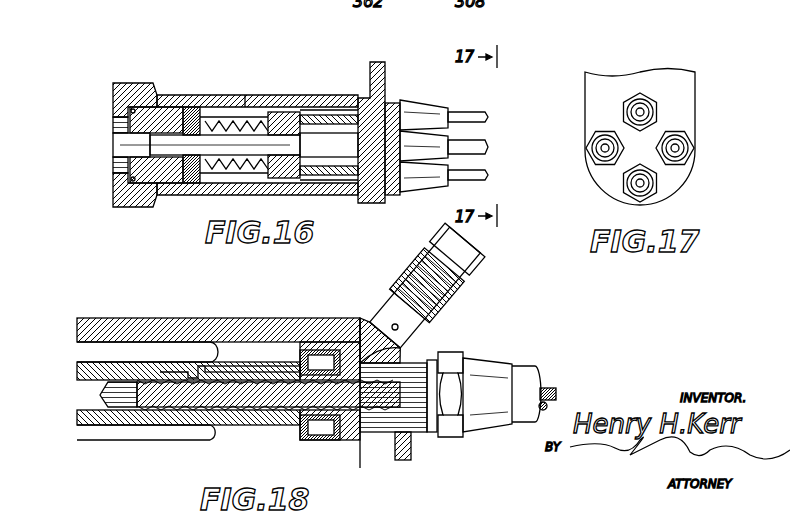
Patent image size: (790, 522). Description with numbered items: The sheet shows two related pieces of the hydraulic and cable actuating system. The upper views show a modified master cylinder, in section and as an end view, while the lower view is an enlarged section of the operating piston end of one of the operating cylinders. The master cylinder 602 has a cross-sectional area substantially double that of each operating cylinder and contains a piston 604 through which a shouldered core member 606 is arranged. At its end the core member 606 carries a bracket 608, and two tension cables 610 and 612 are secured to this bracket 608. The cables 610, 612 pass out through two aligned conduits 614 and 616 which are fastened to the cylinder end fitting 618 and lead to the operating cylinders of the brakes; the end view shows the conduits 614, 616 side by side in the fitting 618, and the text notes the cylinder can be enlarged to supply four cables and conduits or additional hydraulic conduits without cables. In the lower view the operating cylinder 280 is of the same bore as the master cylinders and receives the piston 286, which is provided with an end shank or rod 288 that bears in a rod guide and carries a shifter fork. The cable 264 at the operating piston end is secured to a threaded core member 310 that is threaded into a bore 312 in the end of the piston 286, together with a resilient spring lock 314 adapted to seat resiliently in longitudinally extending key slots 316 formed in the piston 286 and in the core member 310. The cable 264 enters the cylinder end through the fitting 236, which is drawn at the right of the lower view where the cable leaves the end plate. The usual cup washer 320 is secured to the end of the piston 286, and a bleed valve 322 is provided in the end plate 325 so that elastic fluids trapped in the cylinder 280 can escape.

In FIG. 16, the cylinder 602 is at (228, 96).
In FIG. 16, the piston 604 is at (155, 105).
In FIG. 16, the shouldered core member 606 is at (130, 143).
In FIG. 16, the bracket 608 is at (270, 122).
In FIG. 16, the tension cable 610 is at (322, 118).
In FIG. 16, the tension cable 612 is at (358, 176).
In FIG. 16, the conduit 614 is at (460, 122).
In FIG. 17, the conduit 614 is at (650, 108).
In FIG. 16, the conduit 616 is at (462, 176).
In FIG. 17, the conduit 616 is at (650, 183).
In FIG. 16, the cylinder end fitting 618 is at (363, 203).
In FIG. 18, the operating cylinder 280 is at (95, 355).
In FIG. 18, the end shank or rod 288 is at (88, 373).
In FIG. 18, the bore 312 is at (122, 395).
In FIG. 18, the threaded core member 310 is at (223, 382).
In FIG. 18, the key slots 316 is at (182, 374).
In FIG. 18, the resilient spring lock 314 is at (236, 372).
In FIG. 18, the piston 286 is at (300, 350).
In FIG. 18, the cup washer 320 is at (322, 440).
In FIG. 18, the end plate 325 is at (387, 462).
In FIG. 18, the bleed valve 322 is at (474, 250).
In FIG. 18, the nozzle cone 236 is at (520, 370).
In FIG. 18, the cable 264 is at (555, 393).